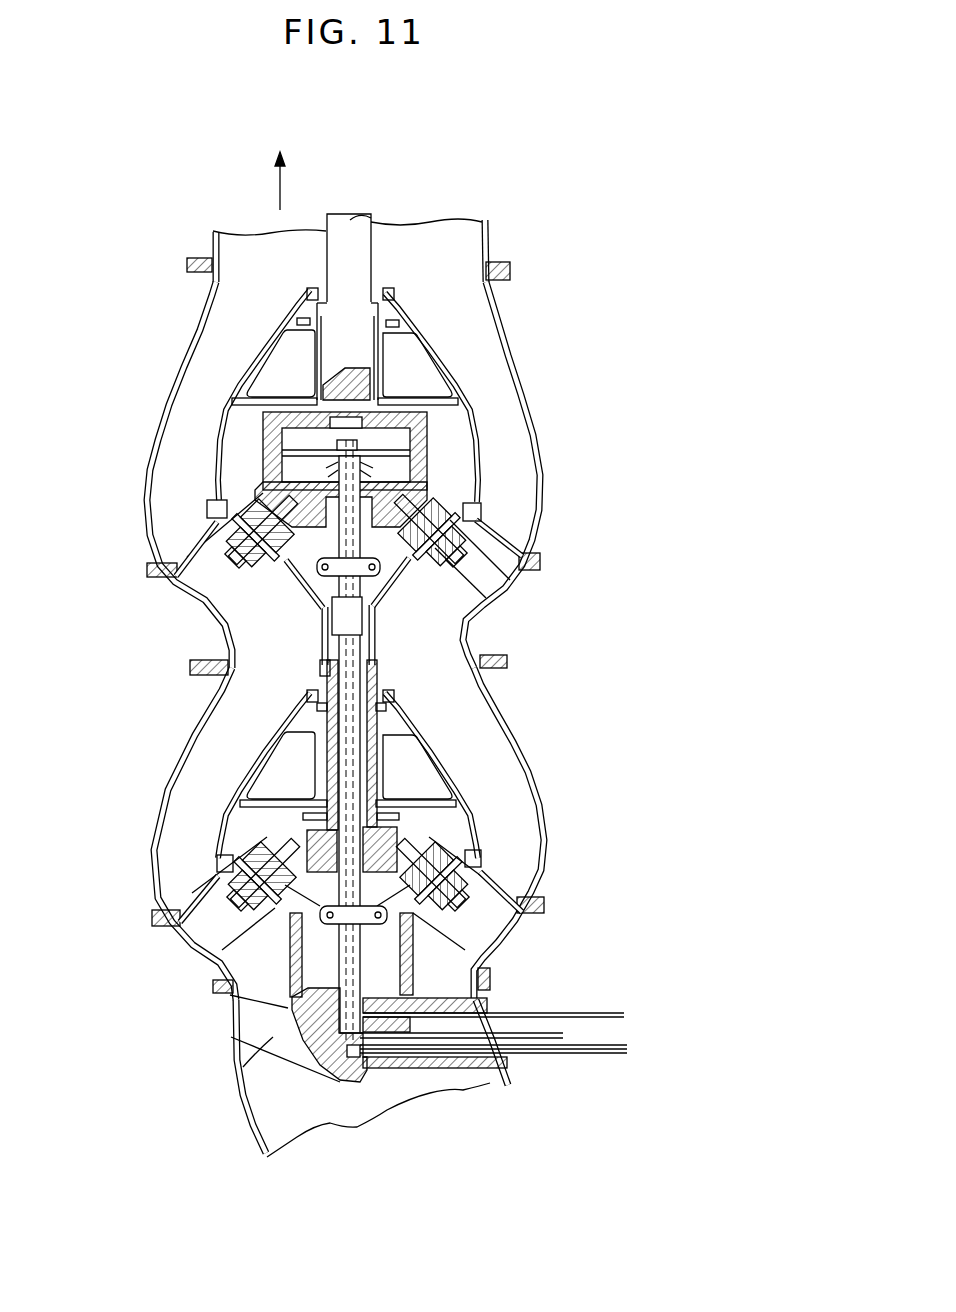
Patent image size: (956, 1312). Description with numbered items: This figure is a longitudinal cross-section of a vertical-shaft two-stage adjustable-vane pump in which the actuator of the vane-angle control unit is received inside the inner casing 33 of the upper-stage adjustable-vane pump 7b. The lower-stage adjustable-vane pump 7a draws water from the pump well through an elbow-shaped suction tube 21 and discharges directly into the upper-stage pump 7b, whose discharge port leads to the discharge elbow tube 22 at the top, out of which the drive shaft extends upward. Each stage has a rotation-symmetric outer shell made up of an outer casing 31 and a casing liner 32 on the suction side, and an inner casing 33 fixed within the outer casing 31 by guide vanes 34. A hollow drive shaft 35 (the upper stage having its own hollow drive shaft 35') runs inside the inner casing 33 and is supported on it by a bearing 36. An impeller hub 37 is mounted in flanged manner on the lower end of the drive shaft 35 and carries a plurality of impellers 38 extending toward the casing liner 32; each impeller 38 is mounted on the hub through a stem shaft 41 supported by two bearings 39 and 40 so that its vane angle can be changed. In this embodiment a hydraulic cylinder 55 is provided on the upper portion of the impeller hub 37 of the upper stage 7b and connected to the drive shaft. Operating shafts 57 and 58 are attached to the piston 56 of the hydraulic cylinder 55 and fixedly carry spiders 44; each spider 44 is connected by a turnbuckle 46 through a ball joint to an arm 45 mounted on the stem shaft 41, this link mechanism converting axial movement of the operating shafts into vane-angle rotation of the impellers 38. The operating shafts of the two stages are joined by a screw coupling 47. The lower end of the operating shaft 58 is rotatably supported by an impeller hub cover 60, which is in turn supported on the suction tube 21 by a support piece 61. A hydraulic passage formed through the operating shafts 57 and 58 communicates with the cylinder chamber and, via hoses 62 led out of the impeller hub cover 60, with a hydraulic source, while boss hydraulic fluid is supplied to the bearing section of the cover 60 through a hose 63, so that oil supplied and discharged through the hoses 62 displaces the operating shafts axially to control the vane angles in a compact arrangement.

The suction tube 21 is at (232, 1040).
The discharge elbow tube 22 is at (485, 232).
The outer casing 31 is at (143, 508).
The casing liner 32 is at (227, 633).
The inner casing 33 is at (445, 390).
The guide vanes 34 is at (187, 380).
The hollow drive shaft 35 is at (410, 748).
The hollow drive shaft 35' is at (428, 351).
The bearing 36 is at (388, 300).
The impeller hub 37 is at (255, 505).
The impellers 38 is at (215, 588).
The bearing 39 is at (225, 522).
The bearing 40 is at (270, 490).
The stem shaft 41 is at (465, 540).
The spider 44 is at (382, 590).
The arm 45 is at (455, 490).
The turnbuckle 46 is at (267, 567).
The screw coupling 47 is at (365, 622).
The hydraulic cylinder 55 is at (430, 418).
The piston 56 is at (412, 440).
The operating shaft 57 is at (380, 455).
The operating shaft 58 is at (440, 808).
The impeller hub cover 60 is at (268, 1088).
The support piece 61 is at (273, 1040).
The hoses 62 is at (532, 1040).
The hose 63 is at (580, 1013).
The lower-stage adjustable-vane pump 7a is at (558, 805).
The upper-stage adjustable-vane pump 7b is at (562, 470).